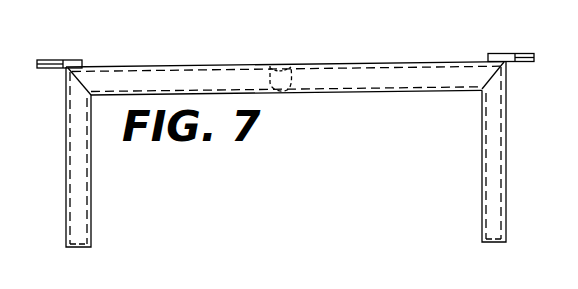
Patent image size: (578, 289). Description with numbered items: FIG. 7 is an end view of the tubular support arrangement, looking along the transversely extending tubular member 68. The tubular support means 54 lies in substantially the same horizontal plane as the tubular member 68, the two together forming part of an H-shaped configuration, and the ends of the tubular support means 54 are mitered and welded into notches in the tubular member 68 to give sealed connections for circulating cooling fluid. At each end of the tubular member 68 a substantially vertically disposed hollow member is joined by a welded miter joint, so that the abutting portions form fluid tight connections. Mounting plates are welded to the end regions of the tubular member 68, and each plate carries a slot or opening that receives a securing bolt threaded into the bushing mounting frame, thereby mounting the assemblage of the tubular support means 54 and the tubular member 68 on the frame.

The tubular support means 54 is at (312, 83).
The tubular member 68 is at (213, 65).